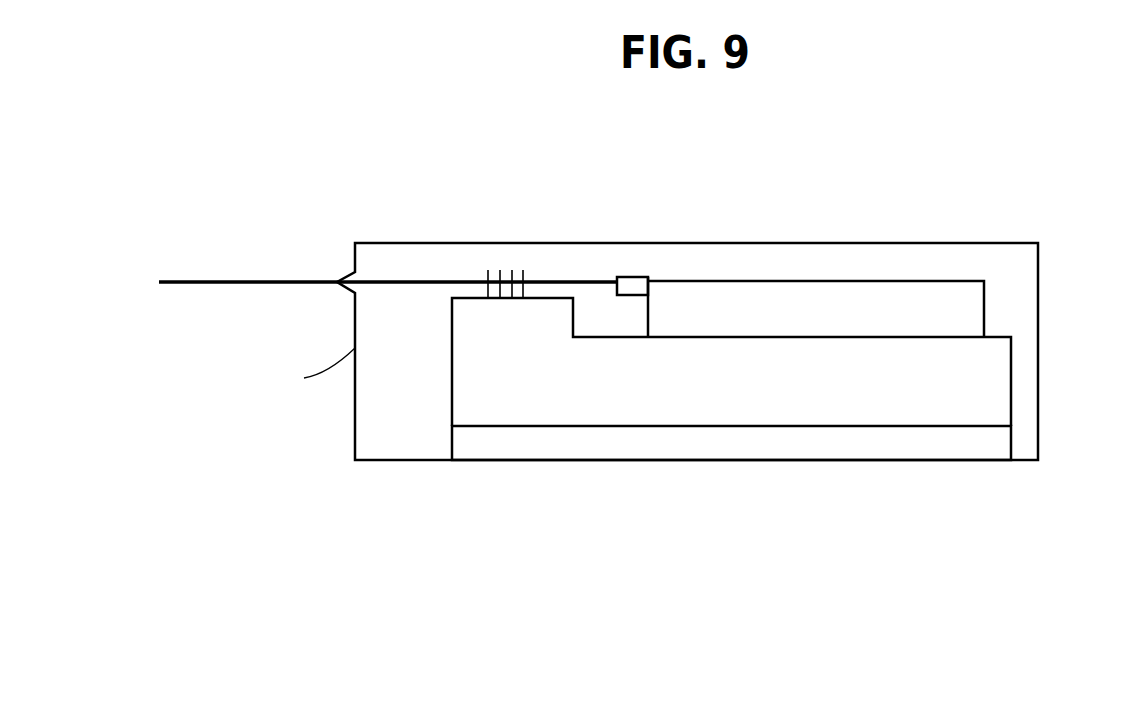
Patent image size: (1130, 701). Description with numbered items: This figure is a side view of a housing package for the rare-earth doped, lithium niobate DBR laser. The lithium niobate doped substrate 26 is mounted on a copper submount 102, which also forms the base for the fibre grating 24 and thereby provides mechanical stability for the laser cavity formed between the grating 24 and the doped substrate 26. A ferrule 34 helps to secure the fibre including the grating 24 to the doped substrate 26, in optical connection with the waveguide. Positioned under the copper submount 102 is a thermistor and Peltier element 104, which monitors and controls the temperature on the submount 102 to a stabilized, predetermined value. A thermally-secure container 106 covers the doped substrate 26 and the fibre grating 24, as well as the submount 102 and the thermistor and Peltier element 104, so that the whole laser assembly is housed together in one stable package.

The fibre grating 24 is at (510, 272).
The ferrule 34 is at (632, 277).
The doped substrate 26 is at (970, 307).
The copper submount 102 is at (995, 392).
The thermistor and Peltier element 104 is at (540, 450).
The thermally-secure container 106 is at (354, 406).